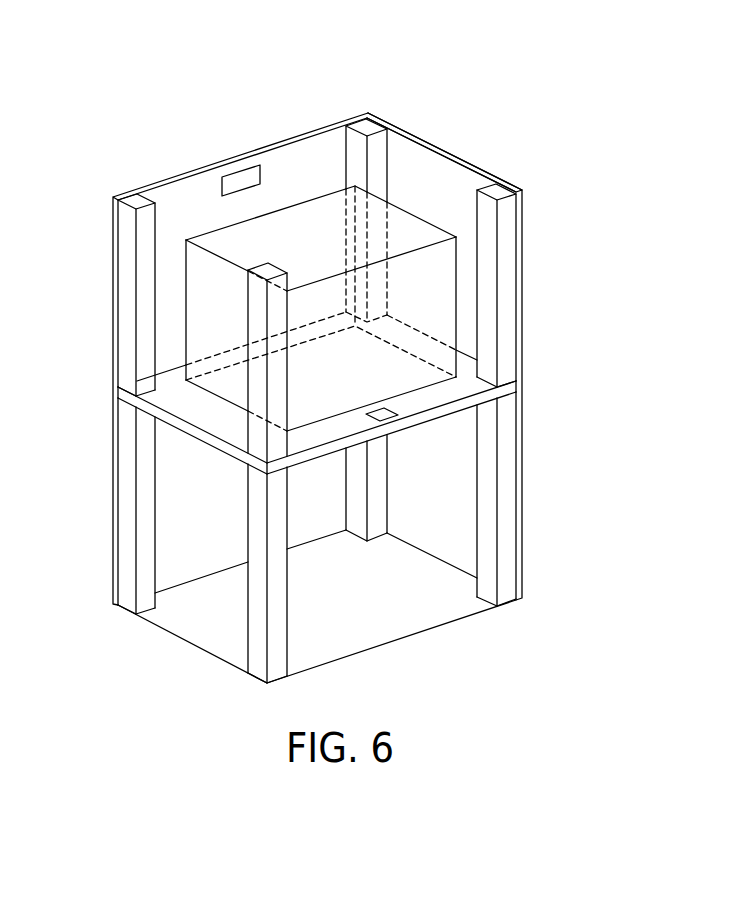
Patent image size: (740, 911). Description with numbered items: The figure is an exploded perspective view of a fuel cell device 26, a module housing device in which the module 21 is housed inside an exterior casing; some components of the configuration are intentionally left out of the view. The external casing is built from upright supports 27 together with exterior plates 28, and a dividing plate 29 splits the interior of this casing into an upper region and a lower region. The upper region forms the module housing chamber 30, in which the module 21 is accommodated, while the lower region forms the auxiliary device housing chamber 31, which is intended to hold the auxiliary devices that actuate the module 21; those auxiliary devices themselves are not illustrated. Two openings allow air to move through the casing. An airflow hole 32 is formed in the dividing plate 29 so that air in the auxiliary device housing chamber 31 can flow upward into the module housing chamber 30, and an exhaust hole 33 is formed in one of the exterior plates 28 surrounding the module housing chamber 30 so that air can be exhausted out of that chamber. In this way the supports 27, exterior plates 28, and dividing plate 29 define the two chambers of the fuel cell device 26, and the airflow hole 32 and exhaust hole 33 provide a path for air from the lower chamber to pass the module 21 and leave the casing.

The fuel cell device 26 is at (162, 27).
The support 27 is at (137, 197).
The exterior plate 28 is at (400, 128).
The module housing chamber 30 is at (417, 173).
The module 21 is at (408, 227).
The dividing plate 29 is at (510, 390).
The auxiliary device housing chamber 31 is at (188, 510).
The airflow hole 32 is at (396, 411).
The exhaust hole 33 is at (234, 178).